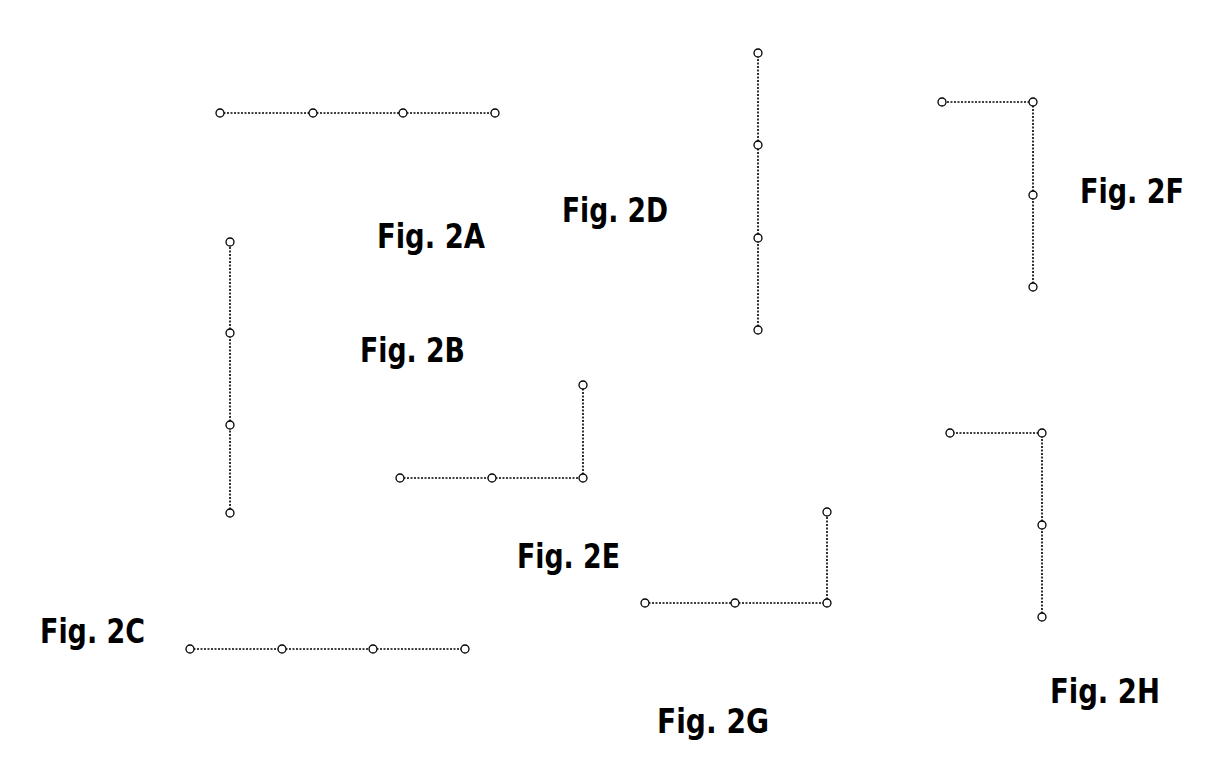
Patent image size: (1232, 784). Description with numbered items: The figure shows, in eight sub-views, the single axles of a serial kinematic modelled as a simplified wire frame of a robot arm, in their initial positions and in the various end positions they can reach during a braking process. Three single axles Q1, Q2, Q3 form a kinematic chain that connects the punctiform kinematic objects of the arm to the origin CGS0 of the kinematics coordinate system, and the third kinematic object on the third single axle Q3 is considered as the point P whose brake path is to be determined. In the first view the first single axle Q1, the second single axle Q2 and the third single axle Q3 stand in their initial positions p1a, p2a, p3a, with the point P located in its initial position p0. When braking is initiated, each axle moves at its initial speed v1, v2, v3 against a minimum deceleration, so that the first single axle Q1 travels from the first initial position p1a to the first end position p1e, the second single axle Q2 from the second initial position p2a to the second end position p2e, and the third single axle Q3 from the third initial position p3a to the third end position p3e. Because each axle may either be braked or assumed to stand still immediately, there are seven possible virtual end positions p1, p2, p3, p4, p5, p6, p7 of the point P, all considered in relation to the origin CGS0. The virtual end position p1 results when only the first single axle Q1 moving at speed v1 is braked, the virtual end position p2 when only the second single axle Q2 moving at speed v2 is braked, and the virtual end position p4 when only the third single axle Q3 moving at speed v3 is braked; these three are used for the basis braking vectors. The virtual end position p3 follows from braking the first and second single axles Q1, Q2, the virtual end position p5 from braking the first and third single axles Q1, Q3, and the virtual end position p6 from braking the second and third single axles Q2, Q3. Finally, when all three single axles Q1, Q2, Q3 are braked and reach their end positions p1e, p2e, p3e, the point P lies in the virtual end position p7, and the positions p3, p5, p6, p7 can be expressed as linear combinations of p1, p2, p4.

In FIG. 2A, the first single axle Q1 is at (268, 110).
In FIG. 2B, the first single axle Q1 is at (228, 470).
In FIG. 2C, the first single axle Q1 is at (218, 646).
In FIG. 2D, the first single axle Q1 is at (760, 268).
In FIG. 2E, the first single axle Q1 is at (428, 475).
In FIG. 2F, the first single axle Q1 is at (1030, 243).
In FIG. 2G, the first single axle Q1 is at (697, 607).
In FIG. 2H, the first single axle Q1 is at (1040, 590).
In FIG. 2A, the second single axle Q2 is at (357, 110).
In FIG. 2B, the second single axle Q2 is at (228, 380).
In FIG. 2C, the second single axle Q2 is at (305, 646).
In FIG. 2D, the second single axle Q2 is at (760, 163).
In FIG. 2E, the second single axle Q2 is at (523, 475).
In FIG. 2F, the second single axle Q2 is at (1037, 148).
In FIG. 2G, the second single axle Q2 is at (768, 607).
In FIG. 2H, the second single axle Q2 is at (1040, 480).
In FIG. 2A, the third single axle Q3 is at (436, 110).
In FIG. 2B, the third single axle Q3 is at (228, 300).
In FIG. 2C, the third single axle Q3 is at (420, 646).
In FIG. 2D, the third single axle Q3 is at (760, 108).
In FIG. 2E, the third single axle Q3 is at (580, 412).
In FIG. 2F, the third single axle Q3 is at (962, 99).
In FIG. 2G, the third single axle Q3 is at (832, 540).
In FIG. 2H, the third single axle Q3 is at (1015, 429).
In FIG. 2A, the point P is at (500, 118).
In FIG. 2B, the point P is at (225, 248).
In FIG. 2C, the point P is at (470, 655).
In FIG. 2D, the point P is at (754, 56).
In FIG. 2E, the point P is at (587, 380).
In FIG. 2F, the point P is at (939, 105).
In FIG. 2G, the point P is at (832, 508).
In FIG. 2H, the point P is at (946, 428).
In FIG. 2A, the origin of the kinematics coordinate system CGS0 is at (215, 118).
In FIG. 2B, the origin of the kinematics coordinate system CGS0 is at (225, 518).
In FIG. 2C, the origin of the kinematics coordinate system CGS0 is at (185, 654).
In FIG. 2D, the origin of the kinematics coordinate system CGS0 is at (752, 326).
In FIG. 2E, the origin of the kinematics coordinate system CGS0 is at (399, 484).
In FIG. 2F, the origin of the kinematics coordinate system CGS0 is at (1027, 294).
In FIG. 2G, the origin of the kinematics coordinate system CGS0 is at (640, 608).
In FIG. 2H, the origin of the kinematics coordinate system CGS0 is at (1037, 623).
In FIG. 2A, the initial position of the point p0 is at (500, 106).
In FIG. 2B, the virtual end position p1 is at (227, 240).
In FIG. 2C, the virtual end position p2 is at (470, 642).
In FIG. 2D, the virtual end position p3 is at (763, 52).
In FIG. 2E, the virtual end position p4 is at (580, 382).
In FIG. 2F, the virtual end position p5 is at (937, 100).
In FIG. 2G, the virtual end position p6 is at (823, 507).
In FIG. 2H, the virtual end position p7 is at (948, 440).
In FIG. 2A, the first initial position p1a is at (280, 118).
In FIG. 2A, the second initial position p2a is at (372, 118).
In FIG. 2A, the third initial position p3a is at (473, 118).
In FIG. 2B, the first end position p1e is at (236, 450).
In FIG. 2D, the first end position p1e is at (750, 278).
In FIG. 2F, the first end position p1e is at (1022, 220).
In FIG. 2H, the first end position p1e is at (1050, 550).
In FIG. 2B, the second end position p2e is at (236, 358).
In FIG. 2C, the second end position p2e is at (318, 655).
In FIG. 2D, the second end position p2e is at (750, 192).
In FIG. 2G, the second end position p2e is at (780, 598).
In FIG. 2H, the second end position p2e is at (1050, 505).
In FIG. 2B, the third end position p3e is at (236, 266).
In FIG. 2E, the third end position p3e is at (590, 410).
In FIG. 2F, the third end position p3e is at (967, 116).
In FIG. 2G, the third end position p3e is at (820, 535).
In FIG. 2H, the third end position p3e is at (975, 429).
In FIG. 2B, the first speed v1 is at (251, 468).
In FIG. 2D, the first speed v1 is at (778, 286).
In FIG. 2F, the first speed v1 is at (1054, 242).
In FIG. 2H, the first speed v1 is at (1063, 572).
In FIG. 2C, the second speed v2 is at (310, 635).
In FIG. 2D, the second speed v2 is at (770, 180).
In FIG. 2G, the second speed v2 is at (770, 630).
In FIG. 2H, the second speed v2 is at (1062, 440).
In FIG. 2E, the third speed v3 is at (602, 437).
In FIG. 2F, the third speed v3 is at (980, 82).
In FIG. 2G, the third speed v3 is at (846, 562).
In FIG. 2H, the third speed v3 is at (990, 413).